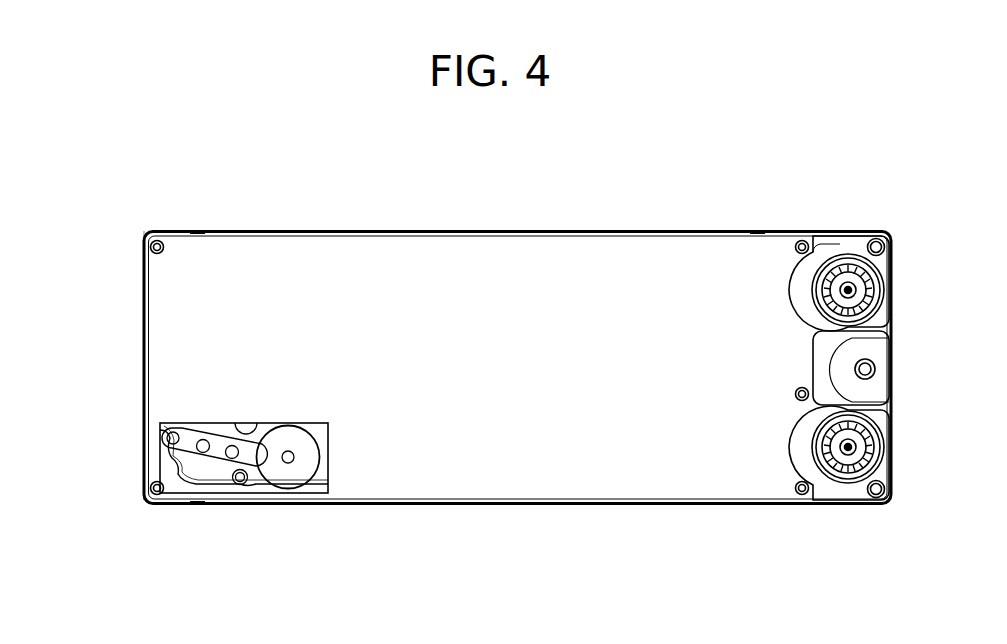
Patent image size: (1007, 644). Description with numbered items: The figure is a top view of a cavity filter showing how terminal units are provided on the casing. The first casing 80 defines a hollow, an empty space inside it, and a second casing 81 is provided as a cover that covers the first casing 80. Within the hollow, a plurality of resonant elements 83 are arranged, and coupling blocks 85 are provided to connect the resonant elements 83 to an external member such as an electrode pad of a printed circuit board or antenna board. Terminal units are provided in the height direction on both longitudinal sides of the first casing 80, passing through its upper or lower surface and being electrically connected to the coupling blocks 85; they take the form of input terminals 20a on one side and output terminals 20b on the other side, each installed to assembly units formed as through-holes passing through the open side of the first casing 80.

The first casing 80 is at (513, 505).
The second casing 81 is at (254, 258).
The resonant element 83 is at (283, 478).
The coupling block 85 is at (220, 448).
The input terminal 20a is at (869, 228).
The output terminal 20b is at (132, 259).